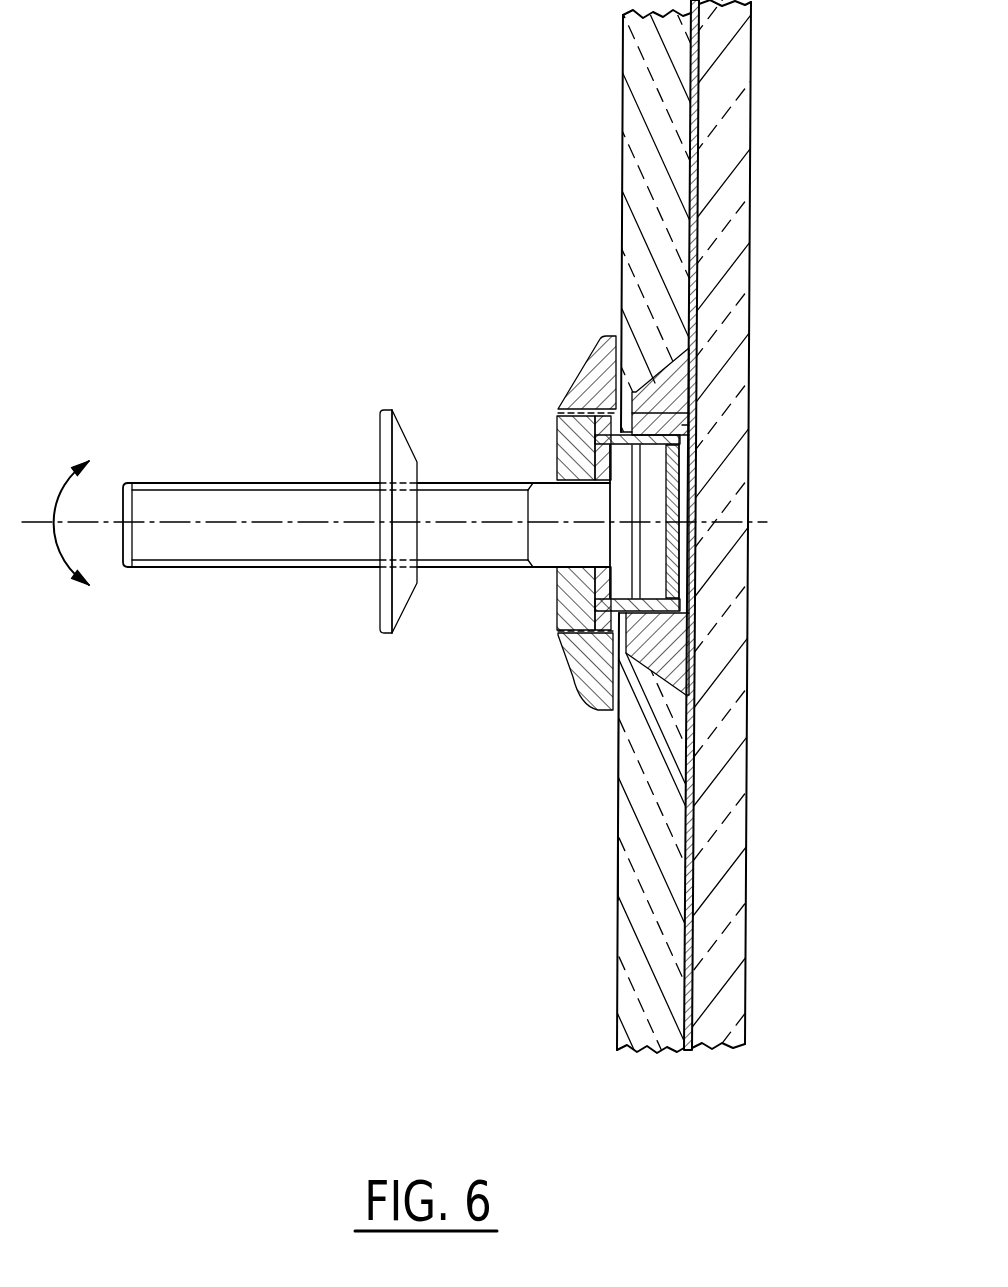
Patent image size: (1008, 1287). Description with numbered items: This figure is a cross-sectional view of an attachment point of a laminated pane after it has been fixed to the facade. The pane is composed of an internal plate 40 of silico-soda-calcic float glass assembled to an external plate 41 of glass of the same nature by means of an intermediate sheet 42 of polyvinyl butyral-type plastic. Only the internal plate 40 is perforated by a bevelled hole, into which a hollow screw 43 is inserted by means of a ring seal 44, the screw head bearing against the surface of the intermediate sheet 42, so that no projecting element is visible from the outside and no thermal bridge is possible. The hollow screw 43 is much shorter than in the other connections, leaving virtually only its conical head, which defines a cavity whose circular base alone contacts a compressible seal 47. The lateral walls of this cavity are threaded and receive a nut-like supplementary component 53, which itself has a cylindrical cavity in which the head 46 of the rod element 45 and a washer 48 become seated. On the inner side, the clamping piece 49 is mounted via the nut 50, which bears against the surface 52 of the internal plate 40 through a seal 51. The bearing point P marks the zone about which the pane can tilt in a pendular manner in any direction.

The internal plate 40 is at (658, 147).
The external plate 41 is at (733, 108).
The intermediate sheet 42 is at (697, 227).
The hollow screw 43 is at (680, 412).
The ring seal 44 is at (657, 358).
The rod element 45 is at (249, 502).
The head 46 is at (622, 507).
The compressible seal 47 is at (700, 583).
The washer 48 is at (560, 597).
The clamping piece 49 is at (572, 445).
The nut 50 is at (583, 672).
The seal 51 is at (613, 710).
The surface 52 is at (617, 800).
The supplementary component 53 is at (603, 358).
The bearing point P is at (682, 425).